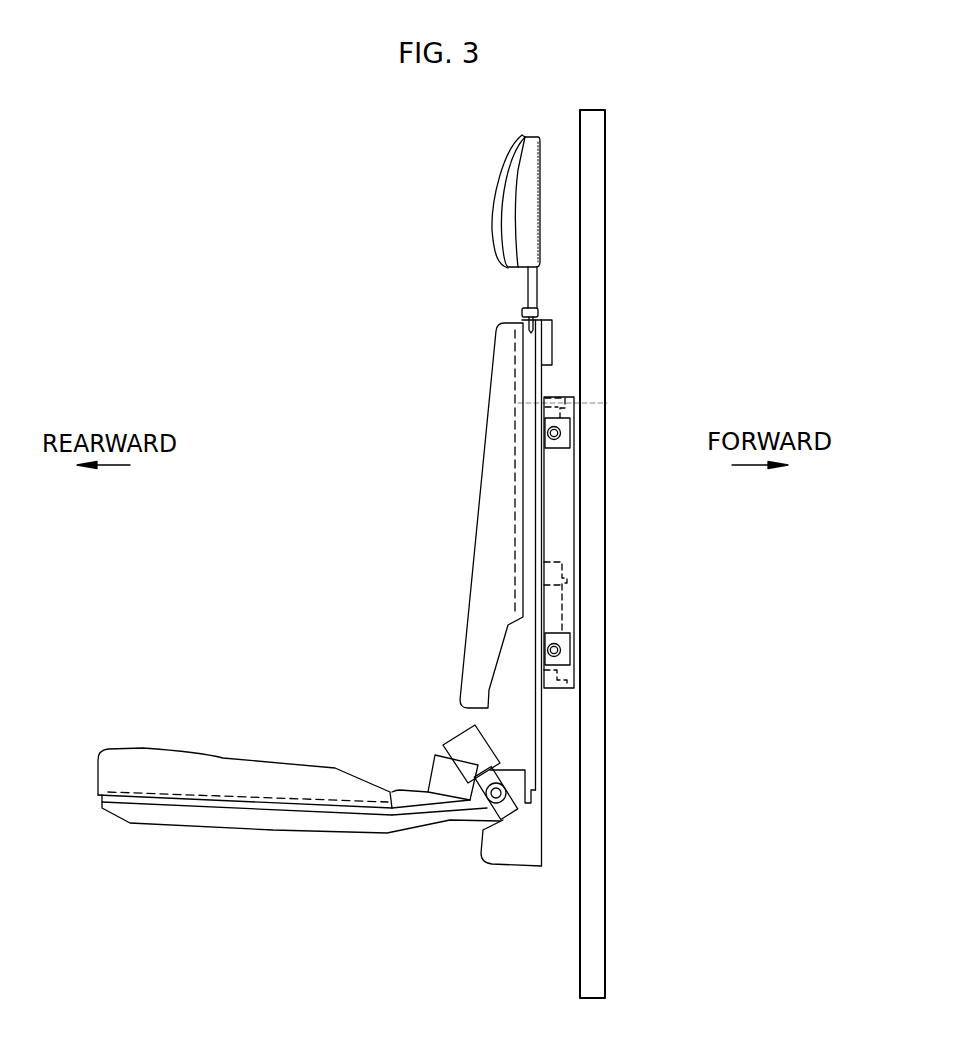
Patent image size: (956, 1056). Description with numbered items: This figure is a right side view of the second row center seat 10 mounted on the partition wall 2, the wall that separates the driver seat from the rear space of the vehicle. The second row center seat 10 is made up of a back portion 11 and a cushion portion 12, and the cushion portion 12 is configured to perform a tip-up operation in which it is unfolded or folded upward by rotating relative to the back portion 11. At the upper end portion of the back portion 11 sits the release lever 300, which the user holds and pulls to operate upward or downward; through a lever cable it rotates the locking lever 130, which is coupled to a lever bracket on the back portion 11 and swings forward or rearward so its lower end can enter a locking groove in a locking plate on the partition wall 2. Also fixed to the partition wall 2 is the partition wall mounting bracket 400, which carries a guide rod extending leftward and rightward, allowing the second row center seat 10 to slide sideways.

The partition wall 2 is at (595, 318).
The second row center seat 10 is at (462, 500).
The back portion 11 is at (485, 570).
The cushion portion 12 is at (225, 773).
The locking lever 130 is at (553, 617).
The release lever 300 is at (522, 312).
The partition wall mounting bracket 400 is at (562, 528).